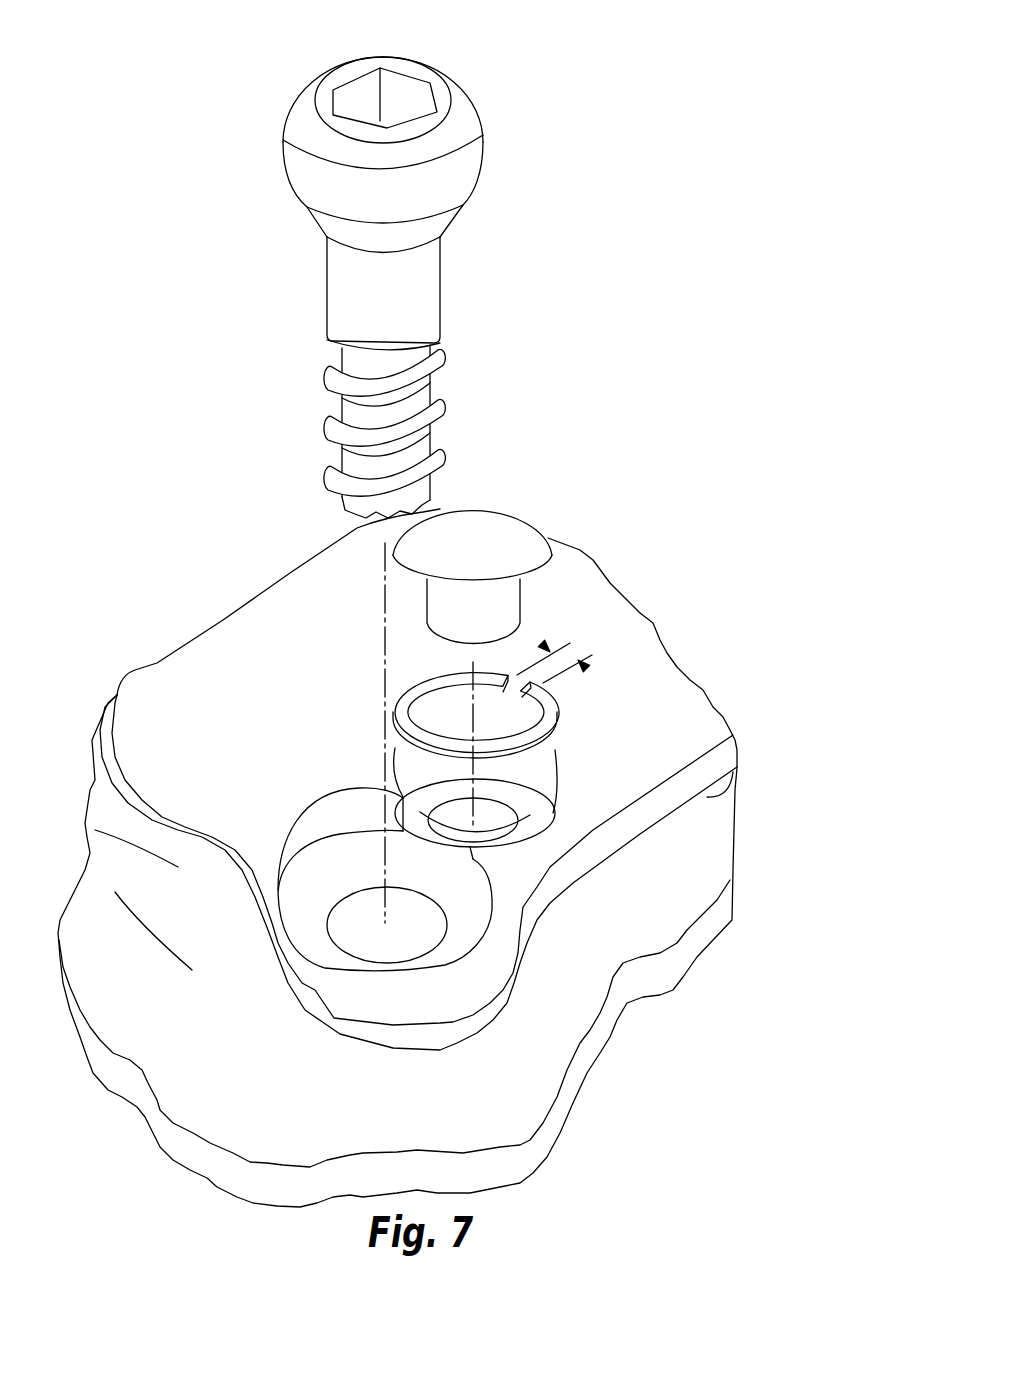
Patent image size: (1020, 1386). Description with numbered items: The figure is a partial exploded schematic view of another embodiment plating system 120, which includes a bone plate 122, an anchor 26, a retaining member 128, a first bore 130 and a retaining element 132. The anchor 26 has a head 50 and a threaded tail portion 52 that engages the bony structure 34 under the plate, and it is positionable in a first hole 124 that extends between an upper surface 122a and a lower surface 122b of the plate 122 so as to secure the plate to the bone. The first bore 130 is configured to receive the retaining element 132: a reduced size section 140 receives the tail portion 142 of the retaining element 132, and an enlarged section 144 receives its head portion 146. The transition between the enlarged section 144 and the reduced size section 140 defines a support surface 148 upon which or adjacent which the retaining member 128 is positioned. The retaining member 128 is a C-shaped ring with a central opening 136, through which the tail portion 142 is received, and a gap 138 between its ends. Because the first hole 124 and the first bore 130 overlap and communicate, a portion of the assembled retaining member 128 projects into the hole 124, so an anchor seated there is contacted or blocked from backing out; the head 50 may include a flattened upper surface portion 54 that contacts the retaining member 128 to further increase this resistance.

The anchor 26 is at (470, 90).
The bony structure 34 is at (680, 880).
The head 50 is at (477, 147).
The tail portion 52 is at (427, 337).
The flattened upper surface portion 54 is at (307, 86).
The plating system 120 is at (198, 407).
The bone plate 122 is at (692, 716).
The upper surface 122a is at (630, 637).
The lower surface 122b is at (733, 793).
The first hole 124 is at (460, 965).
The retaining member 128 is at (416, 675).
The first bore 130 is at (551, 850).
The retaining element 132 is at (535, 494).
The central opening 136 is at (500, 710).
The gap 138 is at (573, 669).
The reduced size section 140 is at (462, 808).
The tail portion 142 is at (503, 768).
The enlarged section 144 is at (305, 900).
The head portion 146 is at (482, 507).
The support surface 148 is at (538, 817).